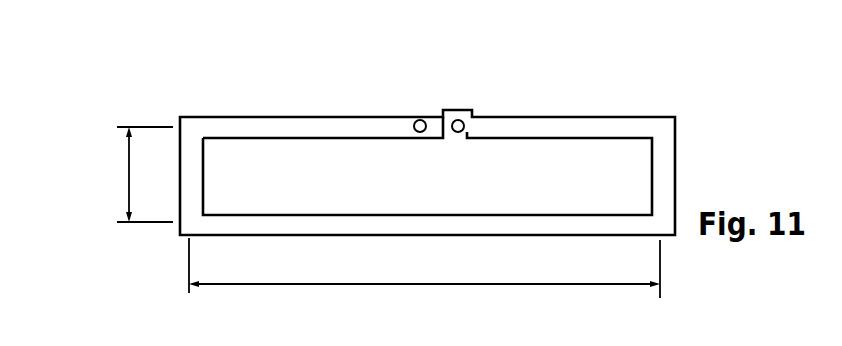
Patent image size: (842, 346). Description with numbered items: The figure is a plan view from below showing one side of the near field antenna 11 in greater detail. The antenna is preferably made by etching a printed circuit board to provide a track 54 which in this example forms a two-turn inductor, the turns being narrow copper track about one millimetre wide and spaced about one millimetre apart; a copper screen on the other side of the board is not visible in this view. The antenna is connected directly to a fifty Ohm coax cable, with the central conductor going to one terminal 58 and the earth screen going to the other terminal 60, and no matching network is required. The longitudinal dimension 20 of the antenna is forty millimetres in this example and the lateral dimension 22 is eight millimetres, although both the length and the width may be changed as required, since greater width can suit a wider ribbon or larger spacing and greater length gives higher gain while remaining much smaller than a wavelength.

The near field antenna 11 is at (446, 129).
The track 54 is at (633, 118).
The terminal 58 is at (414, 121).
The terminal 60 is at (460, 122).
The lateral dimension 22 is at (128, 153).
The longitudinal dimension 20 is at (538, 285).